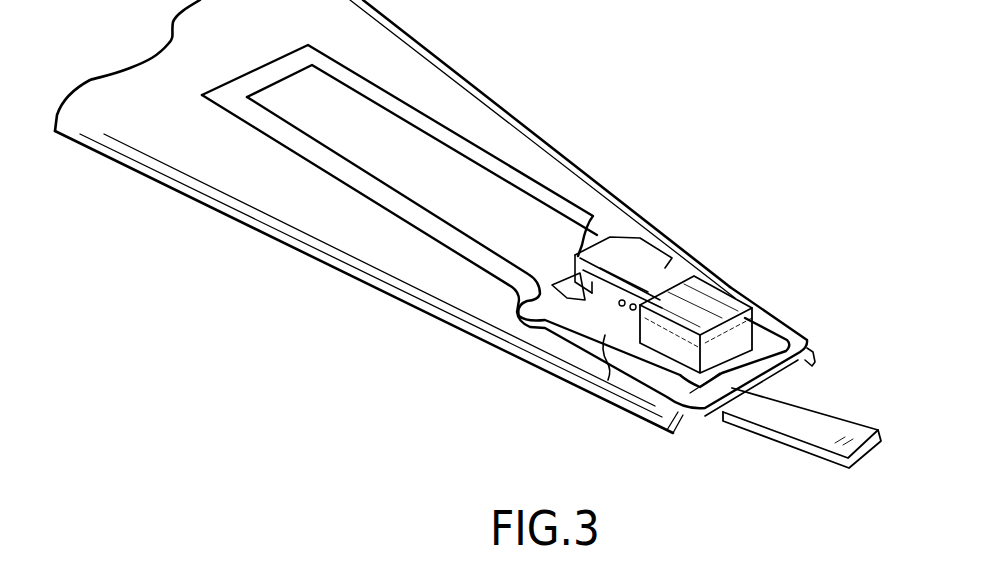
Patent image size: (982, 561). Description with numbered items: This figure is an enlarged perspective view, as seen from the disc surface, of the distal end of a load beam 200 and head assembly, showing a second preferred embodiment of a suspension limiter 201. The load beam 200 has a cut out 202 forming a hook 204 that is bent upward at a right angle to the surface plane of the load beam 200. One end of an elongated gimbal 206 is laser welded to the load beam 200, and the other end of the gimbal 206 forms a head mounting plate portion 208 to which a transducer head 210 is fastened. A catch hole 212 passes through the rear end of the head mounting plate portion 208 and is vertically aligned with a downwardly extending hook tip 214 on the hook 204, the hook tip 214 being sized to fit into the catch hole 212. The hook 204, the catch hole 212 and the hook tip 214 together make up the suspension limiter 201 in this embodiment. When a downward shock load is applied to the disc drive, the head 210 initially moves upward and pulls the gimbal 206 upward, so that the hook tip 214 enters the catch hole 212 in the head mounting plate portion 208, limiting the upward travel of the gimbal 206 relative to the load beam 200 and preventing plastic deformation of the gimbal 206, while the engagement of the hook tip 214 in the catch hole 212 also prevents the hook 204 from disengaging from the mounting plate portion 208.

The load beam 200 is at (553, 170).
The gimbal 206 is at (480, 160).
The hook 204 is at (593, 216).
The suspension limiter 201 is at (628, 263).
The hook tip 214 is at (637, 285).
The transducer head 210 is at (730, 292).
The cut out 202 is at (580, 300).
The catch hole 212 is at (630, 323).
The head mounting plate portion 208 is at (622, 325).